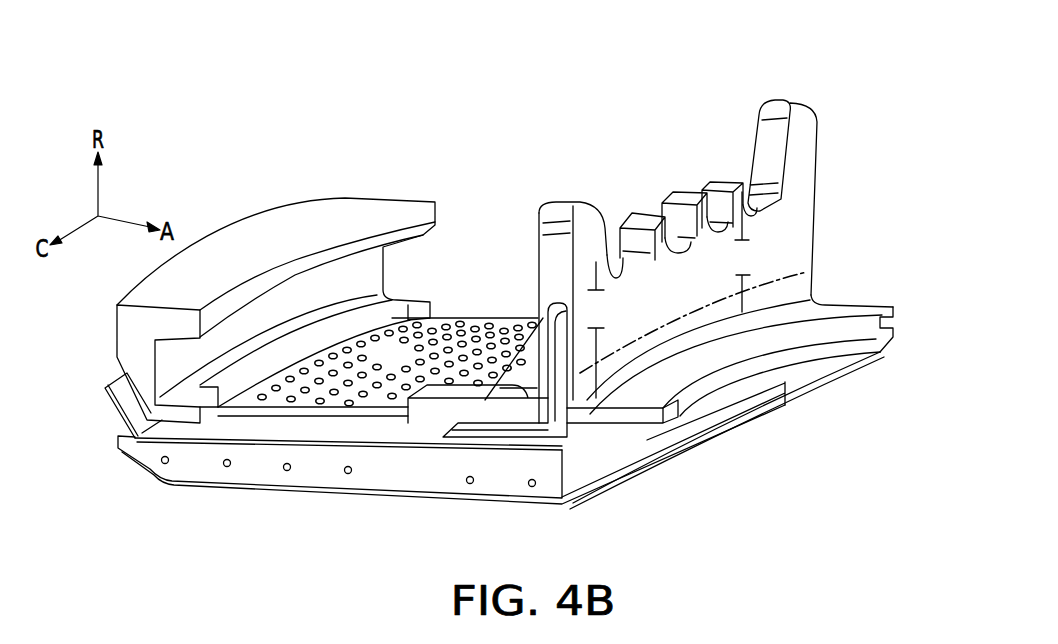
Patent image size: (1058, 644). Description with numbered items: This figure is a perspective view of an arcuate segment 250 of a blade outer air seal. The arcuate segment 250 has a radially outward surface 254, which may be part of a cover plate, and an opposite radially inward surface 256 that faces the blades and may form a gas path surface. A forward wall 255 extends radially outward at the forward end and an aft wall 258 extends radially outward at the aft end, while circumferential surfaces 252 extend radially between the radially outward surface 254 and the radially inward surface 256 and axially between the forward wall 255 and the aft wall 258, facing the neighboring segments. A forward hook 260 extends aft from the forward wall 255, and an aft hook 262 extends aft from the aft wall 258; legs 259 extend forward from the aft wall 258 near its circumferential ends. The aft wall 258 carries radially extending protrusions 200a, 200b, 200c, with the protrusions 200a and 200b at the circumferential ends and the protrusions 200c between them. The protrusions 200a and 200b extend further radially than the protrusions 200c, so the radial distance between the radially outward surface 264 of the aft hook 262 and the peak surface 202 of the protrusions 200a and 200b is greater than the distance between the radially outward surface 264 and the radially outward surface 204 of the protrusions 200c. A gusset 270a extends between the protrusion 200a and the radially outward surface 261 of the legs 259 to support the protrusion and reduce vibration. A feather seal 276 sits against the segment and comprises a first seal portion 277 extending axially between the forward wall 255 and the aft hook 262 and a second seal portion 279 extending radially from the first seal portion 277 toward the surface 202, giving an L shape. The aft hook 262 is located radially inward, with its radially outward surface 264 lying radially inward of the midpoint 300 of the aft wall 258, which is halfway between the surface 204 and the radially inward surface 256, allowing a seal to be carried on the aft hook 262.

The arcuate segment 250 is at (436, 158).
The circumferential surfaces 252 is at (483, 478).
The radially outward surface 254 is at (376, 366).
The forward wall 255 is at (127, 344).
The radially inward surface 256 is at (257, 488).
The aft wall 258 is at (656, 291).
The legs 259 is at (423, 405).
The forward hook 260 is at (310, 235).
The radially outward surface of legs 261 is at (460, 397).
The aft hook 262 is at (797, 355).
The radially outward surface of aft hook 264 is at (683, 366).
The gusset 270a is at (518, 373).
The feather seal 276 is at (115, 417).
The first seal portion 277 is at (190, 430).
The second seal portion 279 is at (560, 397).
The midpoint of aft wall 300 is at (773, 280).
The radially extending protrusion 200a is at (538, 218).
The radially extending protrusion 200b is at (815, 118).
The radially extending protrusions 200c is at (680, 222).
The radially outward surface of protrusions 200a and 200b 202 is at (563, 204).
The radially outward surface of protrusions 200c 204 is at (640, 222).